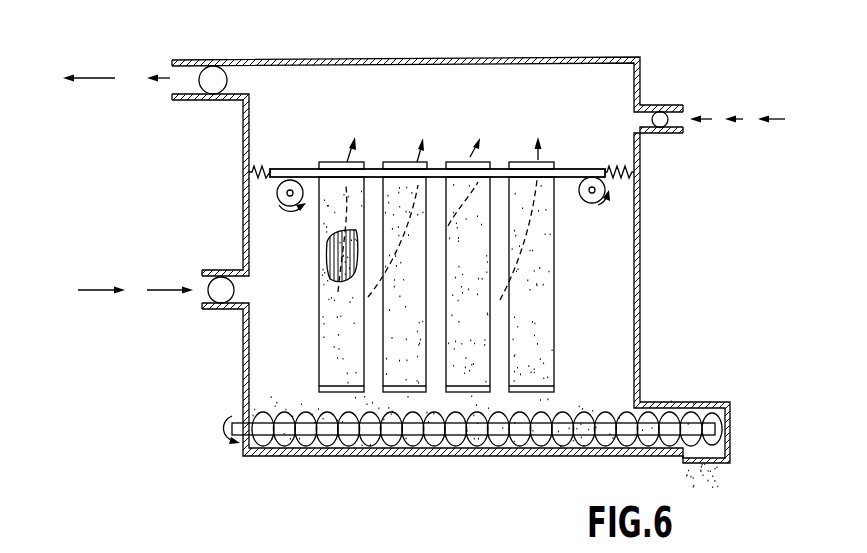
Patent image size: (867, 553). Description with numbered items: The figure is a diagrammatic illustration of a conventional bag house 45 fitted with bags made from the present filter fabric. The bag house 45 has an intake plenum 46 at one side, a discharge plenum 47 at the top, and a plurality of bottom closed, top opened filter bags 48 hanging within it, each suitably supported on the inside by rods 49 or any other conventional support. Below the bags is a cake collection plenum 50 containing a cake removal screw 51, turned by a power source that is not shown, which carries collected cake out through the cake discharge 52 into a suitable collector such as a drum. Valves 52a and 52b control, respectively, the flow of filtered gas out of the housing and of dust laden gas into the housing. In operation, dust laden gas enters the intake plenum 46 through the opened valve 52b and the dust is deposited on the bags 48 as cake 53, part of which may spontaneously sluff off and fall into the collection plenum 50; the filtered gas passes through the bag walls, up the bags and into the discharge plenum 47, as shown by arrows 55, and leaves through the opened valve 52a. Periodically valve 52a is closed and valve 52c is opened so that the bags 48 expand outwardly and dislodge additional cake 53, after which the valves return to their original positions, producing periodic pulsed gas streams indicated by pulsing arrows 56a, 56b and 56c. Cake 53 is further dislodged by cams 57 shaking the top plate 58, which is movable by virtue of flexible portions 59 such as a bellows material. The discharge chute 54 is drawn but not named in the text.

The bag house 45 is at (645, 51).
The intake plenum 46 is at (258, 226).
The discharge plenum 47 is at (247, 123).
The filter bags 48 is at (322, 327).
The rods 49 is at (327, 250).
The cake collection plenum 50 is at (620, 394).
The cake removal screw 51 is at (580, 455).
The cake discharge 52 is at (712, 473).
The valve 52a is at (224, 66).
The valve 52b is at (219, 270).
The valve 52c is at (662, 111).
The cake 53 is at (556, 290).
The discharge chute 54 is at (716, 443).
The arrows 55 is at (545, 144).
The pulsing arrow 56a is at (97, 78).
The pulsing arrow 56b is at (101, 300).
The pulsing arrow 56c is at (778, 117).
The cams 57 is at (596, 205).
The top plate 58 is at (498, 168).
The flexible portions 59 is at (267, 170).